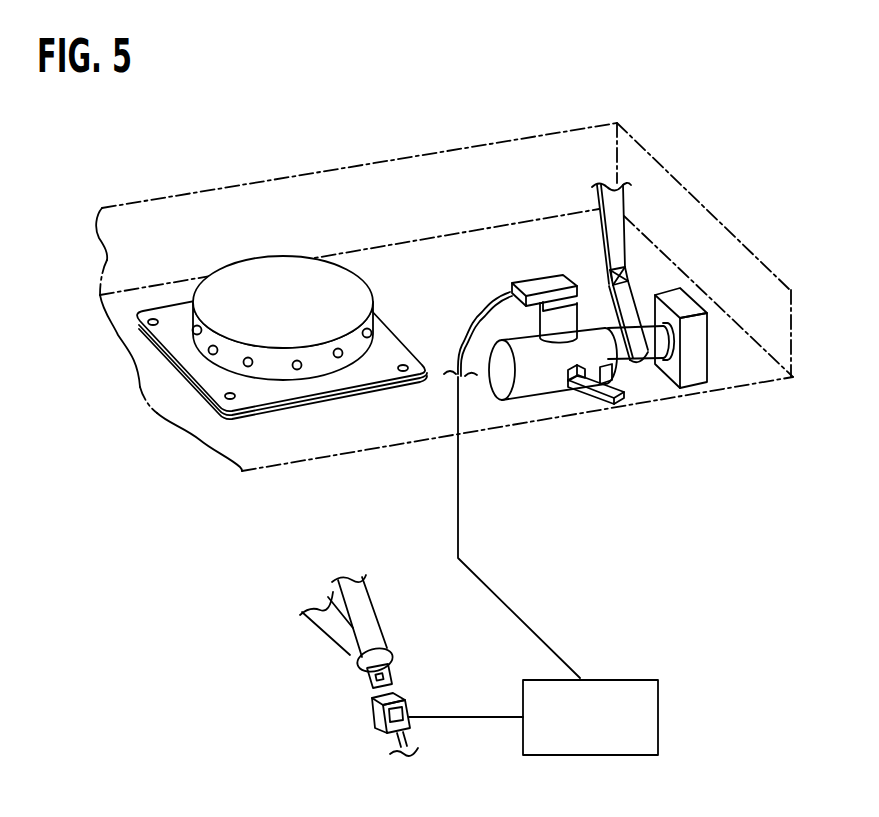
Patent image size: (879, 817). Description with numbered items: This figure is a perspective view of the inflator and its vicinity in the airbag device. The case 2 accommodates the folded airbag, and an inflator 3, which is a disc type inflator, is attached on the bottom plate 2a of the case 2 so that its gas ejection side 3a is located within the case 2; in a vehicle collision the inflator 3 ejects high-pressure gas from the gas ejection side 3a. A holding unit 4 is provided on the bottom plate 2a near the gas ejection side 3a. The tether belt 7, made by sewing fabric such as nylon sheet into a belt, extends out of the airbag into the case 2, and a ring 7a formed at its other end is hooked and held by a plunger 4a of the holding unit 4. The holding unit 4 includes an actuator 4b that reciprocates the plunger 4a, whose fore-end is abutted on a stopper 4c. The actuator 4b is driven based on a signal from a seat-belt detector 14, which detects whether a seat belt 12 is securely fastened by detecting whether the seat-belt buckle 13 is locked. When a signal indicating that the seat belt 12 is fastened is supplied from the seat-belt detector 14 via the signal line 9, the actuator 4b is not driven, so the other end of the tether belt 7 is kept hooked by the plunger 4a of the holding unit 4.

The case 2 is at (444, 299).
The bottom plate 2a is at (392, 428).
The inflator 3 is at (272, 293).
The gas ejection side 3a is at (273, 277).
The holding unit 4 is at (595, 392).
The plunger 4a is at (656, 347).
The actuator 4b is at (550, 377).
The stopper 4c is at (694, 375).
The tether belt 7 is at (696, 262).
The ring 7a is at (627, 303).
The signal line 9 is at (474, 320).
The seat belt 12 is at (340, 630).
The seat-belt buckle 13 is at (390, 649).
The seat-belt detector 14 is at (660, 703).